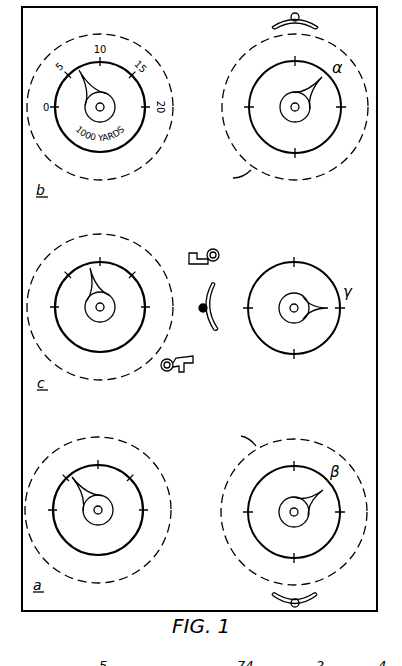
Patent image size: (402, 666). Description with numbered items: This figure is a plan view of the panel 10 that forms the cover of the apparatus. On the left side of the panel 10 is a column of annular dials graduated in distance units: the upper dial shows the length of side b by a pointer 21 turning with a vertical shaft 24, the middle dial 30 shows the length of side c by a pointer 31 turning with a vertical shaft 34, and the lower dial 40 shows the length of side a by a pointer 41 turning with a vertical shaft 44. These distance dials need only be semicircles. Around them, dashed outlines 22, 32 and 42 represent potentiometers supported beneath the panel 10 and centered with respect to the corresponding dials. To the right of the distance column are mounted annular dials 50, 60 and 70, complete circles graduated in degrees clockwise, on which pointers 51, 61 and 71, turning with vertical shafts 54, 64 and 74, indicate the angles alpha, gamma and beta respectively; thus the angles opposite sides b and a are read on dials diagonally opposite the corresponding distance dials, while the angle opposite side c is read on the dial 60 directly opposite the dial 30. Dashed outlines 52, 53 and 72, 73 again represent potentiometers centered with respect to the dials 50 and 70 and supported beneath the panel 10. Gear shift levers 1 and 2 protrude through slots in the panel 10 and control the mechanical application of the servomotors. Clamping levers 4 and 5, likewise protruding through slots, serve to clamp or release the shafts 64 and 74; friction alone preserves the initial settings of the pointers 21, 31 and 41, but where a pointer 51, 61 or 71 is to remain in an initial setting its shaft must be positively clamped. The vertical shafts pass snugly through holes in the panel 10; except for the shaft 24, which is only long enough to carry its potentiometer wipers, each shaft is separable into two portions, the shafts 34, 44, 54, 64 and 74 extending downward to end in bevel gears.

The panel 10 is at (401, 234).
The gear shift lever 1 is at (207, 250).
The gear shift lever 2 is at (182, 371).
The clamping lever 4 is at (210, 305).
The clamping lever 5 is at (284, 624).
The pointer 21 is at (84, 86).
The dashed outline 22 is at (139, 43).
The vertical shaft 24 is at (104, 104).
The annular dial 30 is at (115, 263).
The pointer 31 is at (91, 287).
The dashed outline 32 is at (107, 233).
The vertical shaft 34 is at (108, 299).
The annular dial 40 is at (120, 470).
The pointer 41 is at (88, 497).
The dashed outline 42 is at (128, 441).
The vertical shaft 44 is at (106, 504).
The annular dial 50 is at (259, 44).
The pointer 51 is at (316, 86).
The dashed outline 52 is at (339, 170).
The dashed outline 53 is at (232, 178).
The vertical shaft 54 is at (283, 99).
The annular dial 60 is at (281, 265).
The pointer 61 is at (321, 305).
The vertical shaft 64 is at (281, 300).
The annular dial 70 is at (262, 479).
The pointer 71 is at (313, 493).
The dashed outline 72 is at (325, 446).
The dashed outline 73 is at (239, 437).
The vertical shaft 74 is at (284, 504).